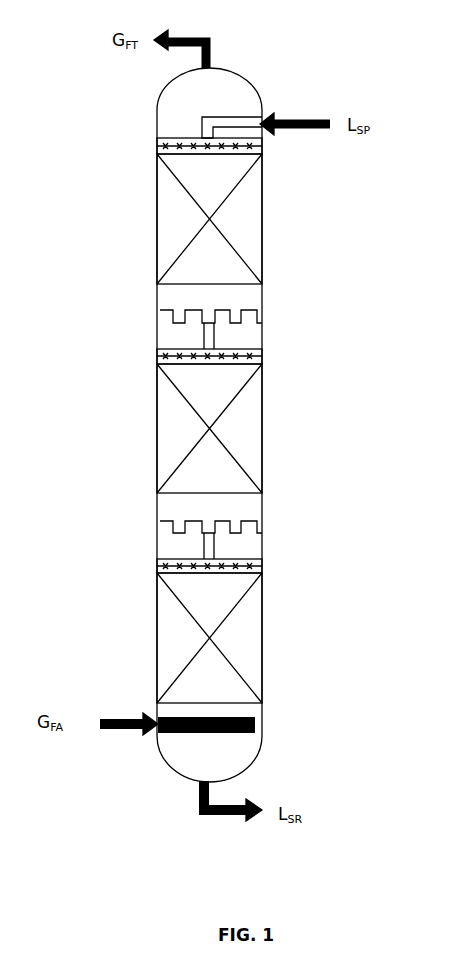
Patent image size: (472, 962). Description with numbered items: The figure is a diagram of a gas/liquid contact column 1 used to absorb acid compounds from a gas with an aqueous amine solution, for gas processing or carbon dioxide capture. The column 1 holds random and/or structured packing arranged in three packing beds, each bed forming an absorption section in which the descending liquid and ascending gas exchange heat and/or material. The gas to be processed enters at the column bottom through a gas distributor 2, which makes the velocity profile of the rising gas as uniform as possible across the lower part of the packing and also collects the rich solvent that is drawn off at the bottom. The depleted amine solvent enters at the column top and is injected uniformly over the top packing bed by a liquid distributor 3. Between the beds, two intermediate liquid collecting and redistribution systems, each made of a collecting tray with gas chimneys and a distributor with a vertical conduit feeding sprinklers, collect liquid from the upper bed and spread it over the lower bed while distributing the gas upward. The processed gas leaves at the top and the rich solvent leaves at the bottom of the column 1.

The gas/liquid contact column 1 is at (157, 295).
The gas distributor 2 is at (262, 712).
The liquid distributor 3 is at (227, 120).